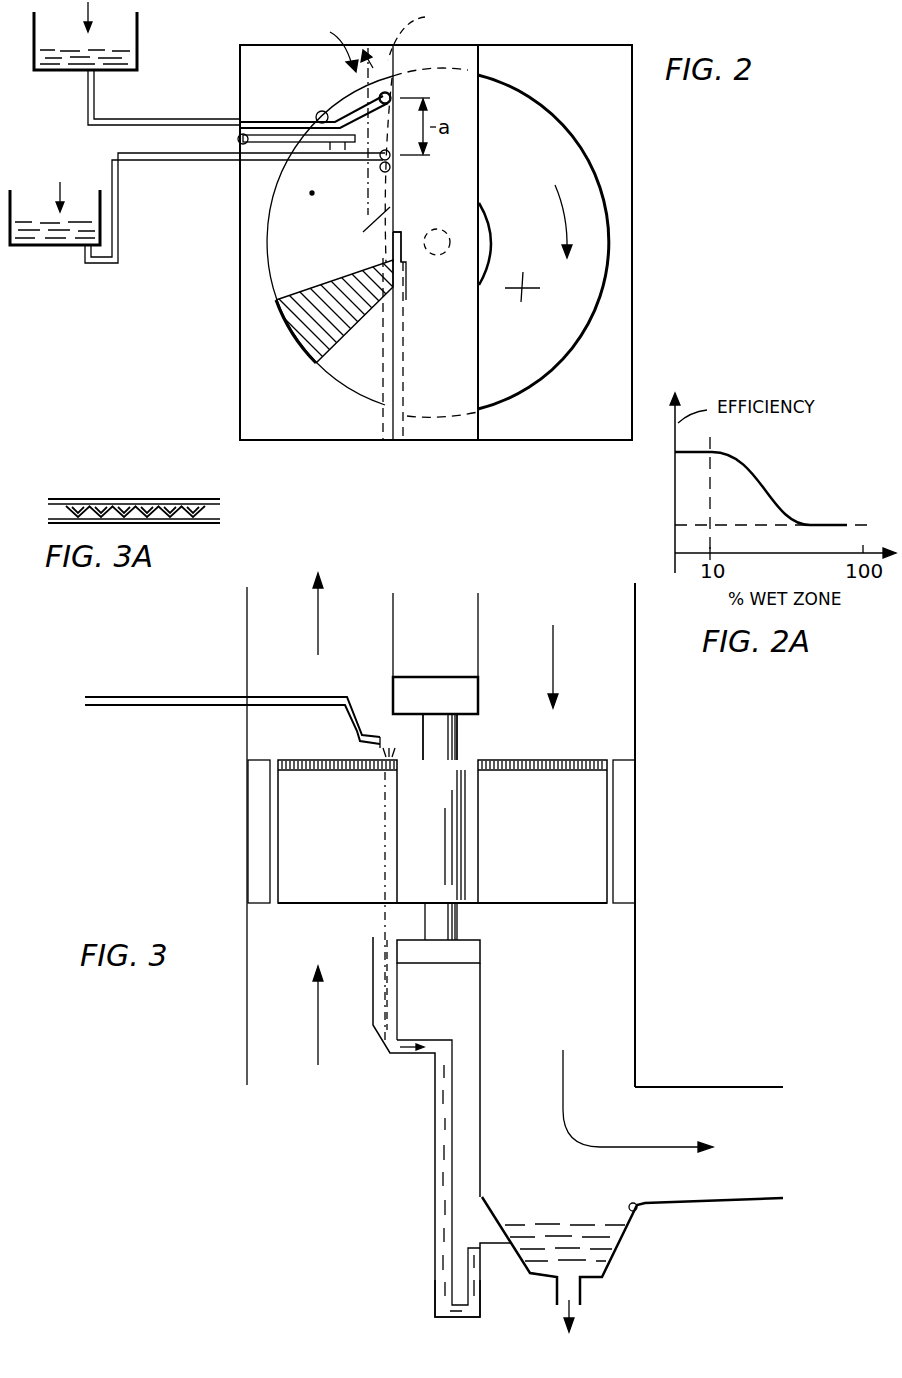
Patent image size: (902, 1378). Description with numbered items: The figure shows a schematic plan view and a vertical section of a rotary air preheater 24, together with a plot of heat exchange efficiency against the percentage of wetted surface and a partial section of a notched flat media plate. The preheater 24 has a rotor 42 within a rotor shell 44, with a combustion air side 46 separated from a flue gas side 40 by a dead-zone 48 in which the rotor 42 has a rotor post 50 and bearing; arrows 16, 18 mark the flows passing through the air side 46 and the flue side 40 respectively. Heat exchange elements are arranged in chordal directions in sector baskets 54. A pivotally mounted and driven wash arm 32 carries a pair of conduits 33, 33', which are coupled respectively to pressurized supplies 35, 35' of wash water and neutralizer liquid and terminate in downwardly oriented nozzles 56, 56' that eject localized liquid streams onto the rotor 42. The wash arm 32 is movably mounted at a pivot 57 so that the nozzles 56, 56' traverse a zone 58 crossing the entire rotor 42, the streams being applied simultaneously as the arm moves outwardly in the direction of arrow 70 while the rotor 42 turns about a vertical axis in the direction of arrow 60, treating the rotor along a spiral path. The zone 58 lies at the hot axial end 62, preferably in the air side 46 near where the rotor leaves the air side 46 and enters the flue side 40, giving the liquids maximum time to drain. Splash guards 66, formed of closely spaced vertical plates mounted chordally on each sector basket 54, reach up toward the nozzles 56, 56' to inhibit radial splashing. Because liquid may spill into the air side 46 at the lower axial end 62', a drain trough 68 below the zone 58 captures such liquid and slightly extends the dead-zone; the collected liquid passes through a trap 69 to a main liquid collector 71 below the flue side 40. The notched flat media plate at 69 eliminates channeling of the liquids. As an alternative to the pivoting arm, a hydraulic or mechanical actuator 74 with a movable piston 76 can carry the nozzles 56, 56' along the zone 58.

In FIG. 2, the first web / filter medium path 16 is at (312, 193).
In FIG. 3, the first web / filter medium path 16 is at (320, 617).
In FIG. 2, the second web / gas flow path 18 is at (525, 293).
In FIG. 3, the second web / gas flow path 18 is at (555, 665).
In FIG. 2, the rotary air preheater 24 is at (648, 214).
In FIG. 2, the wash arm 32 is at (277, 120).
In FIG. 3, the wash arm 32 is at (230, 682).
In FIG. 2, the conduit 33 is at (164, 97).
In FIG. 2, the conduit 33' is at (235, 208).
In FIG. 2, the pressurized supply of wash water 35 is at (119, 36).
In FIG. 2, the pressurized supply of neutralizer liquid 35' is at (55, 246).
In FIG. 2, the flue gas side 40 is at (540, 355).
In FIG. 2, the rotor 42 is at (355, 395).
In FIG. 3, the rotor 42 is at (278, 832).
In FIG. 2, the rotor shell 44 is at (240, 388).
In FIG. 2, the combustion air side 46 is at (362, 201).
In FIG. 2, the dead-zone 48 is at (454, 388).
In FIG. 3, the dead-zone 48 is at (462, 858).
In FIG. 2, the rotor post 50 is at (440, 257).
In FIG. 3, the rotor post 50 is at (456, 741).
In FIG. 2, the sector basket 54 is at (315, 283).
In FIG. 2, the wash liquid nozzle 56 is at (420, 89).
In FIG. 2, the neutralizing liquid nozzle 56' is at (423, 166).
In FIG. 2, the pivot 57 is at (240, 140).
In FIG. 2, the zone 58 is at (328, 41).
In FIG. 2, the arrow 60 is at (562, 210).
In FIG. 3, the hot axial end 62 is at (546, 805).
In FIG. 3, the lower axial end 62' is at (442, 923).
In FIG. 2, the splash guard 66 is at (338, 340).
In FIG. 3, the splash guard 66 is at (321, 772).
In FIG. 3, the drain trough 68 is at (373, 978).
In FIG. 3A, the trap 69 is at (115, 497).
In FIG. 3, the trap 69 is at (438, 1288).
In FIG. 2, the arrow 70 is at (406, 39).
In FIG. 3, the main liquid collector 71 is at (650, 1212).
In FIG. 2, the actuator 74 is at (382, 420).
In FIG. 2, the movable piston 76 is at (393, 238).